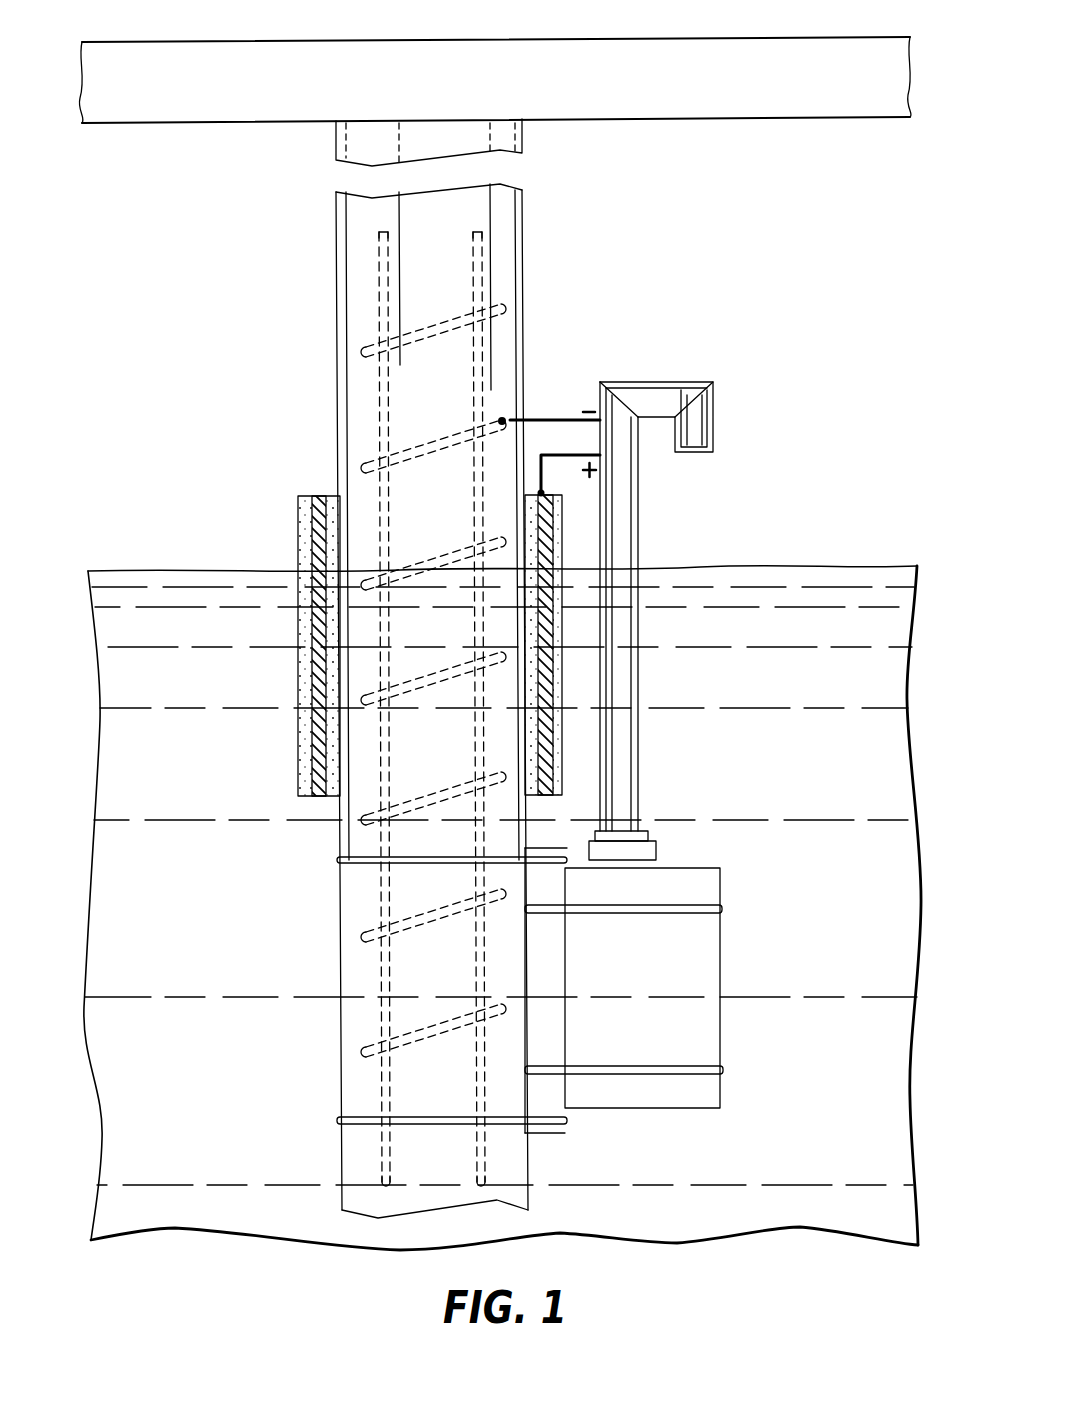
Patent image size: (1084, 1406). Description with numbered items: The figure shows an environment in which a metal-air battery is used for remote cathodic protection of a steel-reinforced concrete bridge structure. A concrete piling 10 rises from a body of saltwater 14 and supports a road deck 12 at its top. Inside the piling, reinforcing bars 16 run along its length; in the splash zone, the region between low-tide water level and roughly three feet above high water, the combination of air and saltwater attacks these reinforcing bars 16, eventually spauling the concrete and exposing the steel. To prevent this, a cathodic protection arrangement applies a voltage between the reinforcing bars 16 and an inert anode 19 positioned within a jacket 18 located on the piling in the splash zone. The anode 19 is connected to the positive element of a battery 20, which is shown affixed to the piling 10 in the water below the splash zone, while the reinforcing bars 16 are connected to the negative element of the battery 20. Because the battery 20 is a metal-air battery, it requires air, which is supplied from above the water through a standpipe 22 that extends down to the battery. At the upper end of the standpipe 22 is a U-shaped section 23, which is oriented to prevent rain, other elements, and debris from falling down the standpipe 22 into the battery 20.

The concrete piling 10 is at (523, 250).
The road deck 12 is at (778, 37).
The body of saltwater 14 is at (828, 566).
The reinforcing bars 16 is at (482, 352).
The jacket 18 is at (300, 553).
The anode 19 is at (312, 516).
The battery 20 is at (720, 988).
The standpipe 22 is at (630, 555).
The U-shaped section 23 is at (668, 388).